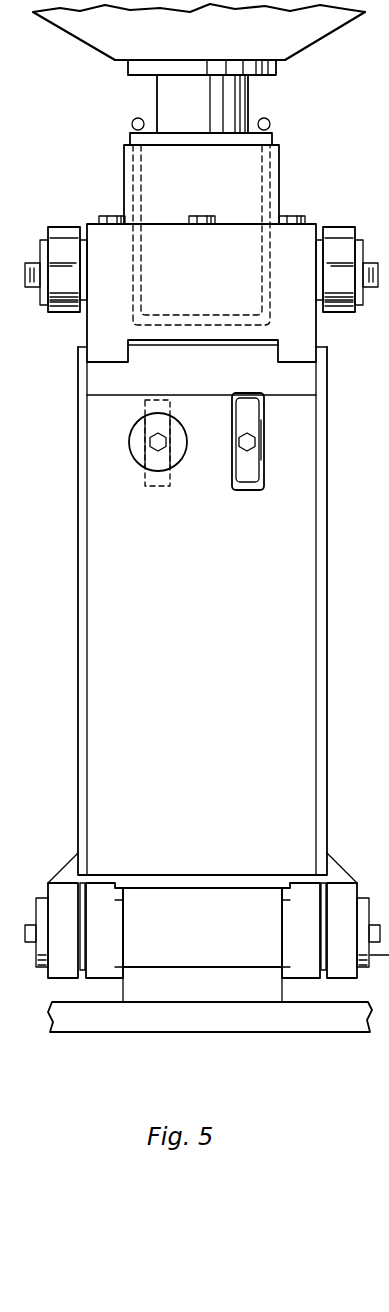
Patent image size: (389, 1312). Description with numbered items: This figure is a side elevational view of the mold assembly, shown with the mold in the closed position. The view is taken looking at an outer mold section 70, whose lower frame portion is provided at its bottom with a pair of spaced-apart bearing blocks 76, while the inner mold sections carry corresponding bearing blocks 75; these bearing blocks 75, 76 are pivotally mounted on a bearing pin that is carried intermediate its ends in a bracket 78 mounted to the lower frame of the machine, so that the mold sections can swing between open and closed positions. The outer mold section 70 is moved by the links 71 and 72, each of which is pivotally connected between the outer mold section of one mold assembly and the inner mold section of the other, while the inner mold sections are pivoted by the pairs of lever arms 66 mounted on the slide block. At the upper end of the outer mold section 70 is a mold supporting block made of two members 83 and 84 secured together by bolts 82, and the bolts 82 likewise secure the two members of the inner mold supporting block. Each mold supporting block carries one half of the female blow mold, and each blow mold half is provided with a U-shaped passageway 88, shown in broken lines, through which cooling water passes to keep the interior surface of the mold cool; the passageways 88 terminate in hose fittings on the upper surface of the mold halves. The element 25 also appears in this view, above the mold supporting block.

The pedestal column 25 is at (157, 97).
The lever arm 66 is at (62, 226).
The outer mold section 70 is at (305, 667).
The link 71 is at (250, 470).
The link 72 is at (143, 455).
The bearing block 75 is at (93, 892).
The bearing block 76 is at (48, 893).
The bracket 78 is at (158, 985).
The bolt 82 is at (200, 216).
The mold supporting block member 83 is at (98, 380).
The mold supporting block member 84 is at (302, 332).
The U-shaped passageway 88 is at (133, 168).